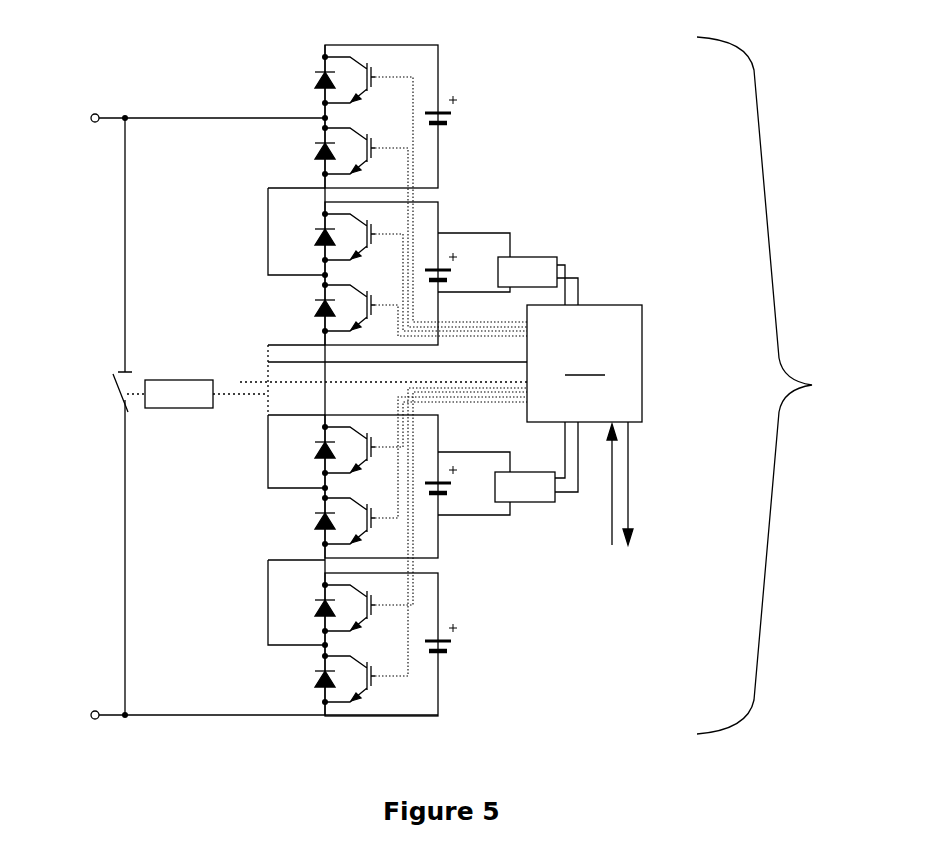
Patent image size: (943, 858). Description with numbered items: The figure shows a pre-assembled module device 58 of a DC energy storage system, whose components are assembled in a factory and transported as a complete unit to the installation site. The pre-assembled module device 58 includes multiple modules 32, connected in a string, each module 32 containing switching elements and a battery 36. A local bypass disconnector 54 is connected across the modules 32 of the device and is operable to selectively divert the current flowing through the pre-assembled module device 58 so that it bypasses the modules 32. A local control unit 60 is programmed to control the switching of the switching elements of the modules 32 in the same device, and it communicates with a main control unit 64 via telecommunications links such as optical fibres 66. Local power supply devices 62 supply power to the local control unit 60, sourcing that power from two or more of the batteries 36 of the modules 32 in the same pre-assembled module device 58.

The module 32 is at (423, 65).
The battery 36 is at (492, 237).
The local bypass disconnector 54 is at (112, 398).
The pre-assembled module device 58 is at (781, 385).
The local control unit 60 is at (584, 363).
The local power supply device 62 is at (537, 267).
The main control unit 64 is at (621, 508).
The optical fibres 66 is at (655, 483).